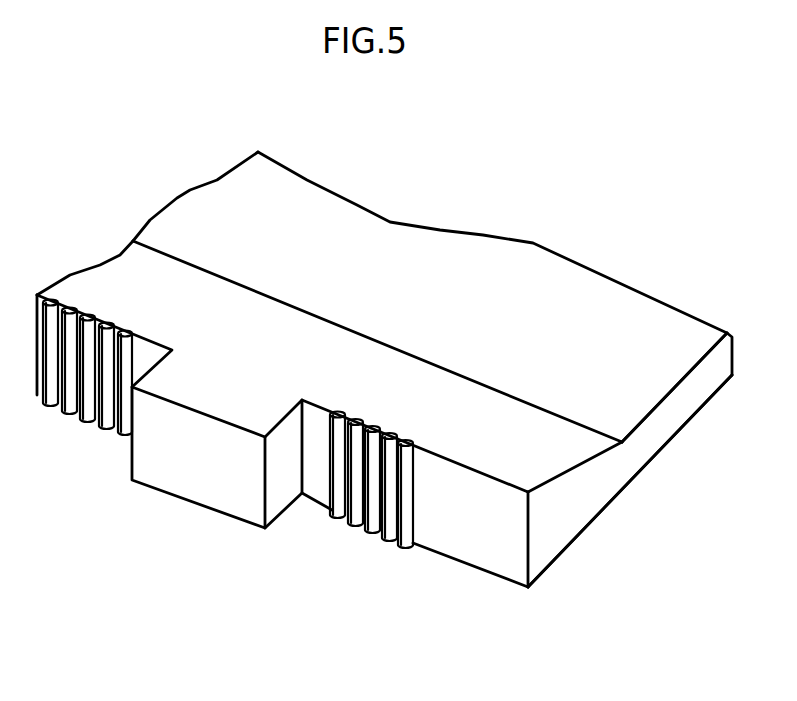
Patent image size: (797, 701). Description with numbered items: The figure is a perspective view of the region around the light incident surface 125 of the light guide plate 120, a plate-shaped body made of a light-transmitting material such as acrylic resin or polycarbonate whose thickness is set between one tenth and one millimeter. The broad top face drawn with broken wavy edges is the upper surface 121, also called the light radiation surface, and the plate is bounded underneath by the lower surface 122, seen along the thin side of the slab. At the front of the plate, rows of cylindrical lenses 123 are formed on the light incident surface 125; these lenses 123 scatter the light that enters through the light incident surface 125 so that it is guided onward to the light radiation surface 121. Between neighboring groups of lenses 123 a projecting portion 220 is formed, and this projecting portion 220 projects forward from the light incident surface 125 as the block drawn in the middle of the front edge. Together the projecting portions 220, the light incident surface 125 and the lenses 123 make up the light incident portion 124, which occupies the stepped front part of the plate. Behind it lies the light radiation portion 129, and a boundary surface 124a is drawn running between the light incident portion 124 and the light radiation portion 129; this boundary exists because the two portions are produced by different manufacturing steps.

The light guide plate 120 is at (305, 560).
The upper surface (light radiation surface) 121 is at (440, 242).
The lower surface 122 is at (683, 420).
The lenses 123 is at (368, 533).
The light incident portion 124 is at (553, 513).
The boundary surface 124a is at (137, 237).
The light incident surface 125 is at (375, 432).
The light radiation portion 129 is at (538, 238).
The projecting portion 220 is at (192, 470).